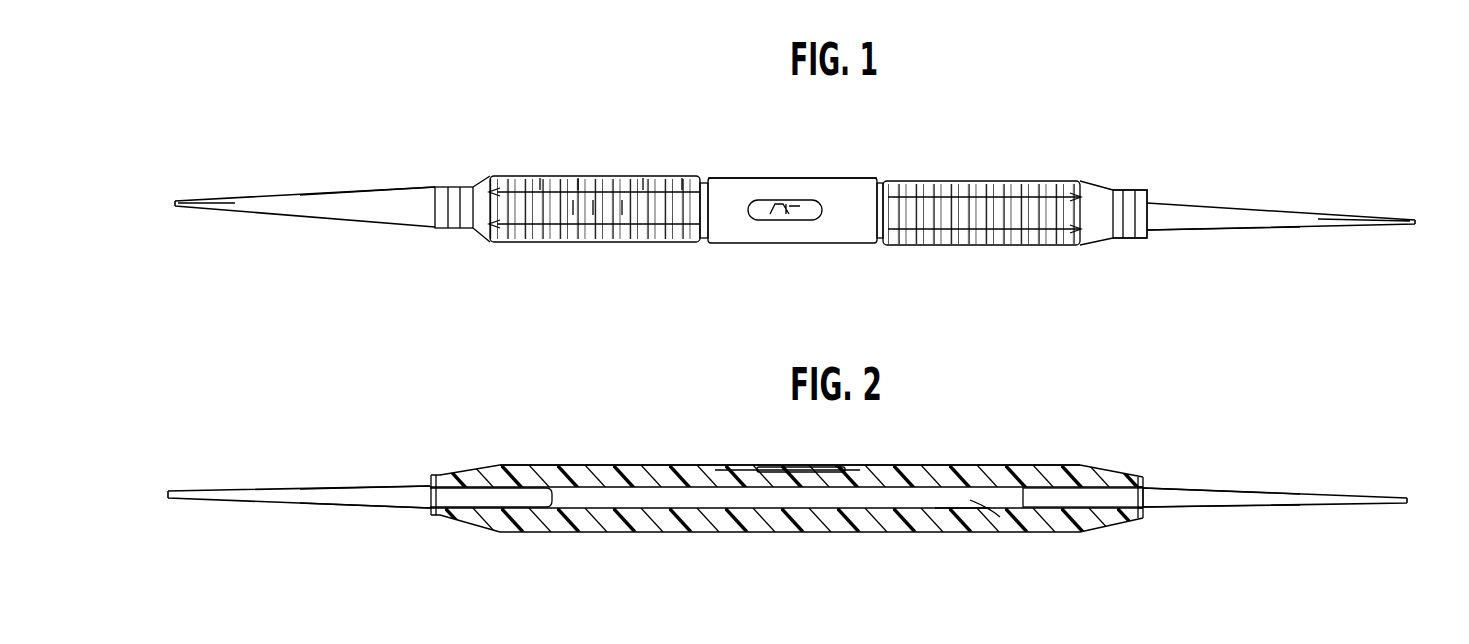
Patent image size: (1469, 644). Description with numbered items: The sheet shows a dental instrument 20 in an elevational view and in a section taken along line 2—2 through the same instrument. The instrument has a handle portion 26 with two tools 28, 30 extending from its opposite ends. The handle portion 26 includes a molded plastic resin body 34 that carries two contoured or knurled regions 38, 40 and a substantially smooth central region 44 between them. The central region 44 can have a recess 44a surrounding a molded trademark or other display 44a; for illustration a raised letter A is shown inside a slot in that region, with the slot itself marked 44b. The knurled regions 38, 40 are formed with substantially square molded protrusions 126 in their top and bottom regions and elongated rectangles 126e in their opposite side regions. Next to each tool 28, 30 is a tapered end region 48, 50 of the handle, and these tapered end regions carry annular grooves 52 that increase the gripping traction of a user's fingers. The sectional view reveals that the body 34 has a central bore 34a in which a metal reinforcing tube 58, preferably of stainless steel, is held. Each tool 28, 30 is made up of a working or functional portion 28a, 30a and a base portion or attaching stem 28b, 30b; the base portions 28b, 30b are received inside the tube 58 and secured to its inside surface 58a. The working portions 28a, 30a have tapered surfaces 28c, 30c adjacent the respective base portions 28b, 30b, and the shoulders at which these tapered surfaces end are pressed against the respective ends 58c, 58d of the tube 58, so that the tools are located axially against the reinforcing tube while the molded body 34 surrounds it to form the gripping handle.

In FIG. 1, the section line 2— 2 is at (162, 204).
In FIG. 1, the dental instrument 20 is at (1104, 172).
In FIG. 2, the dental instrument 20 is at (623, 445).
In FIG. 1, the handle portion 26 is at (689, 175).
In FIG. 2, the handle portion 26 is at (543, 461).
In FIG. 1, the tool 28 is at (1205, 198).
In FIG. 2, the tool 28 is at (1188, 478).
In FIG. 2, the working portion 28a is at (1242, 510).
In FIG. 2, the base portion 28b is at (1080, 466).
In FIG. 1, the tapered surface 28c is at (1205, 235).
In FIG. 2, the tapered surface 28c is at (1152, 490).
In FIG. 1, the tool 30 is at (338, 186).
In FIG. 2, the tool 30 is at (234, 486).
In FIG. 2, the working portion 30a is at (282, 512).
In FIG. 2, the base portion 30b is at (522, 498).
In FIG. 1, the tapered surface 30c is at (370, 222).
In FIG. 2, the tapered surface 30c is at (397, 483).
In FIG. 1, the molded plastic resin body 34 is at (864, 176).
In FIG. 2, the molded plastic resin body 34 is at (716, 461).
In FIG. 2, the central bore 34a is at (903, 472).
In FIG. 1, the contoured or knurled region 38 is at (970, 181).
In FIG. 1, the contoured or knurled region 40 is at (600, 174).
In FIG. 1, the smooth central region 44 is at (754, 176).
In FIG. 1, the recess / molded display 44a is at (817, 197).
In FIG. 2, the recess / molded display 44a is at (840, 466).
In FIG. 1, the slot 44b is at (803, 220).
In FIG. 2, the slot 44b is at (773, 466).
In FIG. 1, the tapered end region 48 is at (1127, 240).
In FIG. 2, the tapered end region 48 is at (1120, 533).
In FIG. 1, the tapered end region 50 is at (440, 229).
In FIG. 2, the tapered end region 50 is at (458, 530).
In FIG. 1, the annular grooves 52 is at (470, 185).
In FIG. 2, the metal reinforcing tube 58 is at (941, 499).
In FIG. 2, the inside surface 58a is at (1000, 512).
In FIG. 2, the tube end 58c is at (1145, 508).
In FIG. 2, the tube end 58d is at (427, 512).
In FIG. 1, the square molded protrusions 126 is at (578, 174).
In FIG. 1, the elongated rectangles 126e is at (573, 213).